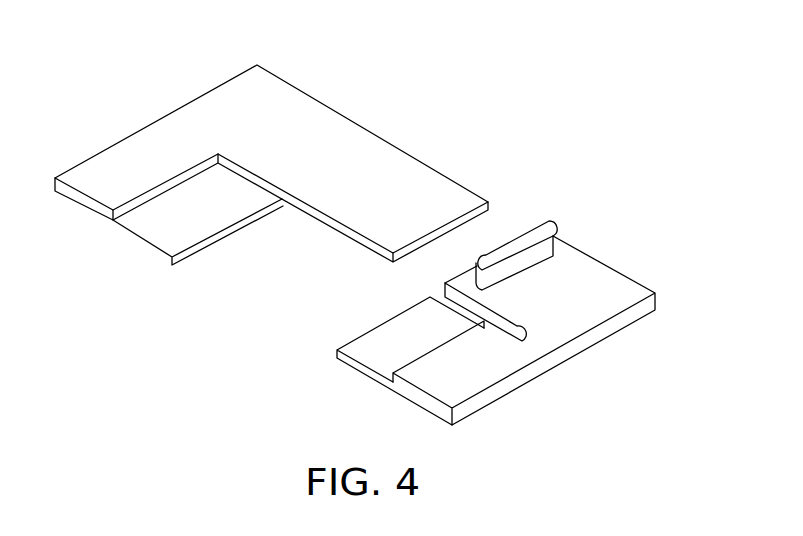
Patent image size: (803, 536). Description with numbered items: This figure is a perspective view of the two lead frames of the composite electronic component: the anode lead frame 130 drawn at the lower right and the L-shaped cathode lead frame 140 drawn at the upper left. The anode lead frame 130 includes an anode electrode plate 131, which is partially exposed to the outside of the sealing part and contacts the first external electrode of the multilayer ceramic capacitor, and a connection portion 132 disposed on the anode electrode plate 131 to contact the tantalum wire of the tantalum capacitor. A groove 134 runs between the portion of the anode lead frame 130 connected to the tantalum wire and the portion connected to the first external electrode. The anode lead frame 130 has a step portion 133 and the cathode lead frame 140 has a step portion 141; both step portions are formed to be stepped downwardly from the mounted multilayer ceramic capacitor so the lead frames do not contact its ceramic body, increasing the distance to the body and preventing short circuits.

The anode lead frame 130 is at (508, 296).
The anode electrode plate 131 is at (575, 312).
The connection portion 132 is at (532, 240).
The step portion 133 is at (387, 352).
The groove 134 is at (530, 336).
The cathode lead frame 140 is at (318, 82).
The step portion 141 is at (195, 215).